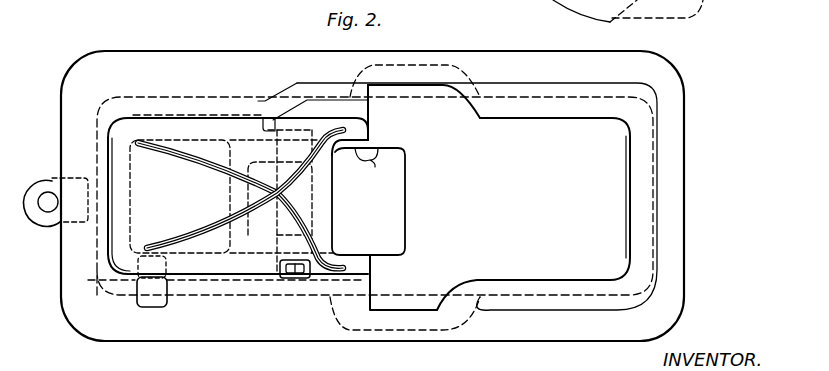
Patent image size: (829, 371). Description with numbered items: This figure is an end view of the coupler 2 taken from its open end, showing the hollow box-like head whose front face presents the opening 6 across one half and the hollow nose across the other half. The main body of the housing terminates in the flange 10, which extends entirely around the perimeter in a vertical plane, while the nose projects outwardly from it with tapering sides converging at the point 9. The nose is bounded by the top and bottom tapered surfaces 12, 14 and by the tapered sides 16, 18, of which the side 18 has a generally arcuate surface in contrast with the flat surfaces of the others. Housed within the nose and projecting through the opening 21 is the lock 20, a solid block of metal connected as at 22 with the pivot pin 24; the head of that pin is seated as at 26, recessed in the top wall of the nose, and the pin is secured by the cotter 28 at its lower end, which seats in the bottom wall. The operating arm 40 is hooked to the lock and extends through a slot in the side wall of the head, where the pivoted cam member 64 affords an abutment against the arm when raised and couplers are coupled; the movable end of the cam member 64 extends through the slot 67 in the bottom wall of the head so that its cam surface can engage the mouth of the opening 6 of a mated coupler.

The coupler 2 is at (695, 113).
The opening 6 is at (650, 178).
The flange 10 is at (634, 313).
The operating arm 40 is at (60, 177).
The tapered side 16 is at (231, 196).
The top tapered surface 12 is at (240, 204).
The bottom tapered surface 14 is at (245, 189).
The tapered side 18 is at (280, 191).
The pivot pin 24 is at (270, 117).
The connection 22 is at (291, 148).
The seat 26 is at (372, 134).
The opening 21 is at (372, 151).
The lock 20 is at (400, 195).
The point 9 is at (277, 196).
The cotter 28 is at (290, 277).
The slot 67 is at (143, 278).
The cam member 64 is at (155, 300).